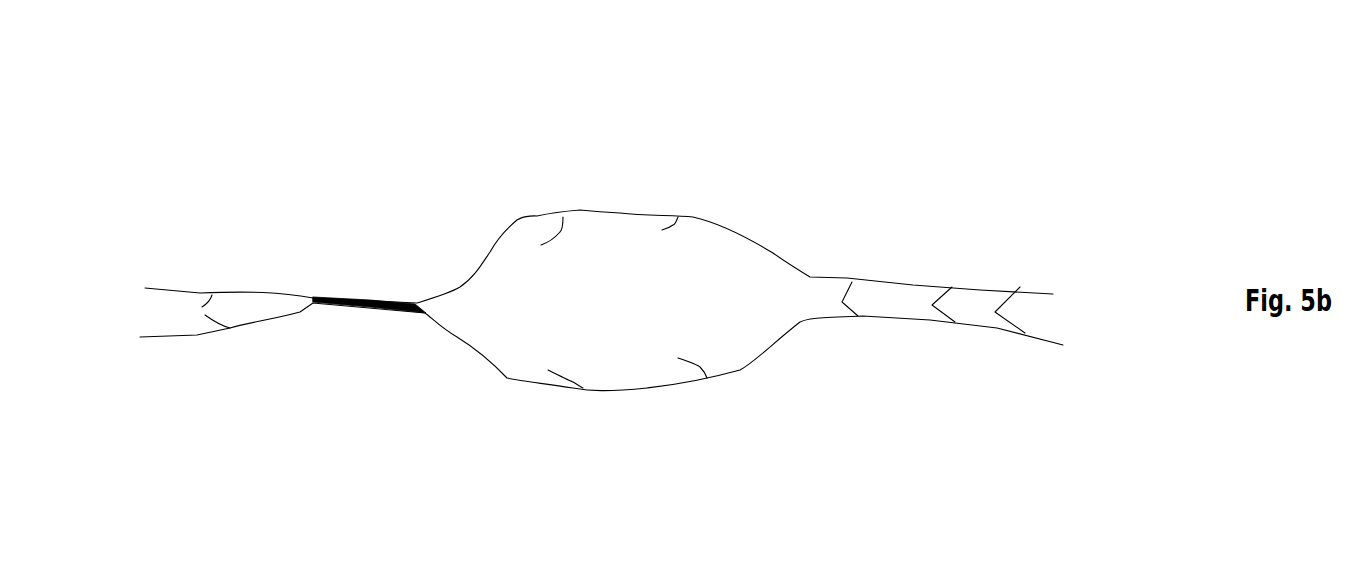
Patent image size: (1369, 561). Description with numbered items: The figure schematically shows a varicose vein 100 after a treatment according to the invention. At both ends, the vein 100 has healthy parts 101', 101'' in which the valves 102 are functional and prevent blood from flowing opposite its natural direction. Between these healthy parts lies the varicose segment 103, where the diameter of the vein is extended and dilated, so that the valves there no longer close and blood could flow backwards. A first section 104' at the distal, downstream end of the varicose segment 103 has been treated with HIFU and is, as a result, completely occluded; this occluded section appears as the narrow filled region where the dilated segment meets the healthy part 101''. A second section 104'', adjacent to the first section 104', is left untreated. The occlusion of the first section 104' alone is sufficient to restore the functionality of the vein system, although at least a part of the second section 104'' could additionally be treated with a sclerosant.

The vein 100 is at (877, 347).
The healthy part of the vein 101' is at (971, 247).
The healthy part of the vein 101'' is at (195, 244).
The valve 102 is at (852, 297).
The varicose segment 103 is at (788, 397).
The first section 104' is at (369, 241).
The second section 104'' is at (624, 148).